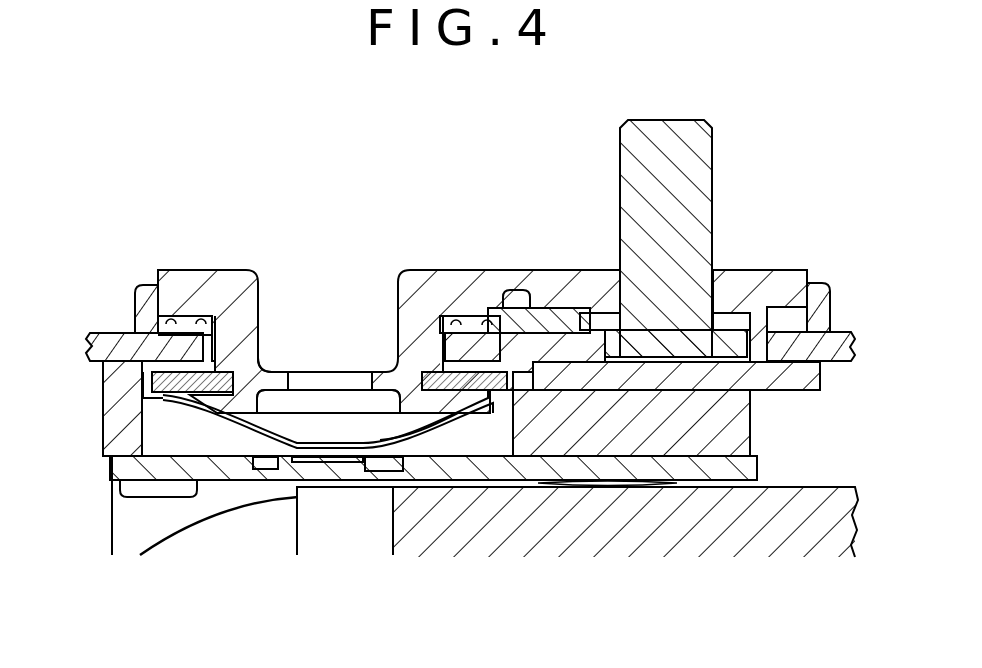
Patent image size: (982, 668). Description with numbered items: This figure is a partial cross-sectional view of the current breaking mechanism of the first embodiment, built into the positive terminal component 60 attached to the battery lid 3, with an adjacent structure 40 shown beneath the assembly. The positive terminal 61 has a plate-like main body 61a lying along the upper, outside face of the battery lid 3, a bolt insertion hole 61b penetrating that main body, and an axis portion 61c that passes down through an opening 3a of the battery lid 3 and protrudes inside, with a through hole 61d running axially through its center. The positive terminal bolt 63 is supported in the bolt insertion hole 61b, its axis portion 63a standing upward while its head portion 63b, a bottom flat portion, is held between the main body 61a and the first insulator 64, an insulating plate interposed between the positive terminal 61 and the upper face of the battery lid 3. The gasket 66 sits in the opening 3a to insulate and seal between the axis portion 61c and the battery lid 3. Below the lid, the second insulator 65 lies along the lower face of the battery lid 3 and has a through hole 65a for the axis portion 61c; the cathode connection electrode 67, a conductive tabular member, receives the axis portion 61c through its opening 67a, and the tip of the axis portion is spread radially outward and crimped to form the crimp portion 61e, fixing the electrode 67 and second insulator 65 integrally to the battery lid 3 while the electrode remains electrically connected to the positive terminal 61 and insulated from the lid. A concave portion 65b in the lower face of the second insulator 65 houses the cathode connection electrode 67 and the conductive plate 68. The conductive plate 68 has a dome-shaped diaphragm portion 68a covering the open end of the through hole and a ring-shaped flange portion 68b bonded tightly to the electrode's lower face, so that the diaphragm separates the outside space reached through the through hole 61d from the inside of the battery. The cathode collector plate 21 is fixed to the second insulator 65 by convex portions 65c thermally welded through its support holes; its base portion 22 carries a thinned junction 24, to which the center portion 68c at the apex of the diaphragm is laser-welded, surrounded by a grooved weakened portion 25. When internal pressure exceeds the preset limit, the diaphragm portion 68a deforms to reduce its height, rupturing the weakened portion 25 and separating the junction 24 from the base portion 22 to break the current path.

The battery lid 3 is at (100, 332).
The opening 3a is at (201, 312).
The cathode collector plate 21 is at (104, 552).
The base portion 22 is at (127, 470).
The junction 24 is at (327, 464).
The weakened portion 25 is at (277, 472).
The base 40 is at (834, 480).
The positive terminal component 60 is at (430, 192).
The positive terminal 61 is at (462, 268).
The main body 61a is at (513, 268).
The bolt insertion hole 61b is at (600, 270).
The axis portion 61c is at (380, 292).
The through hole 61d is at (325, 320).
The crimp portion 61e is at (213, 400).
The positive terminal bolt 63 is at (706, 238).
The axis portion 63a is at (682, 204).
The head portion 63b is at (717, 344).
The first insulator 64 is at (138, 285).
The second insulator 65 is at (746, 426).
The through hole 65a is at (430, 276).
The concave portion 65b is at (506, 470).
The convex portion 65c is at (155, 490).
The gasket 66 is at (199, 318).
The cathode connection electrode 67 is at (150, 380).
The opening 67a is at (222, 335).
The conductive plate 68 is at (245, 445).
The diaphragm portion 68a is at (428, 425).
The flange portion 68b is at (482, 415).
The center portion 68c is at (356, 460).